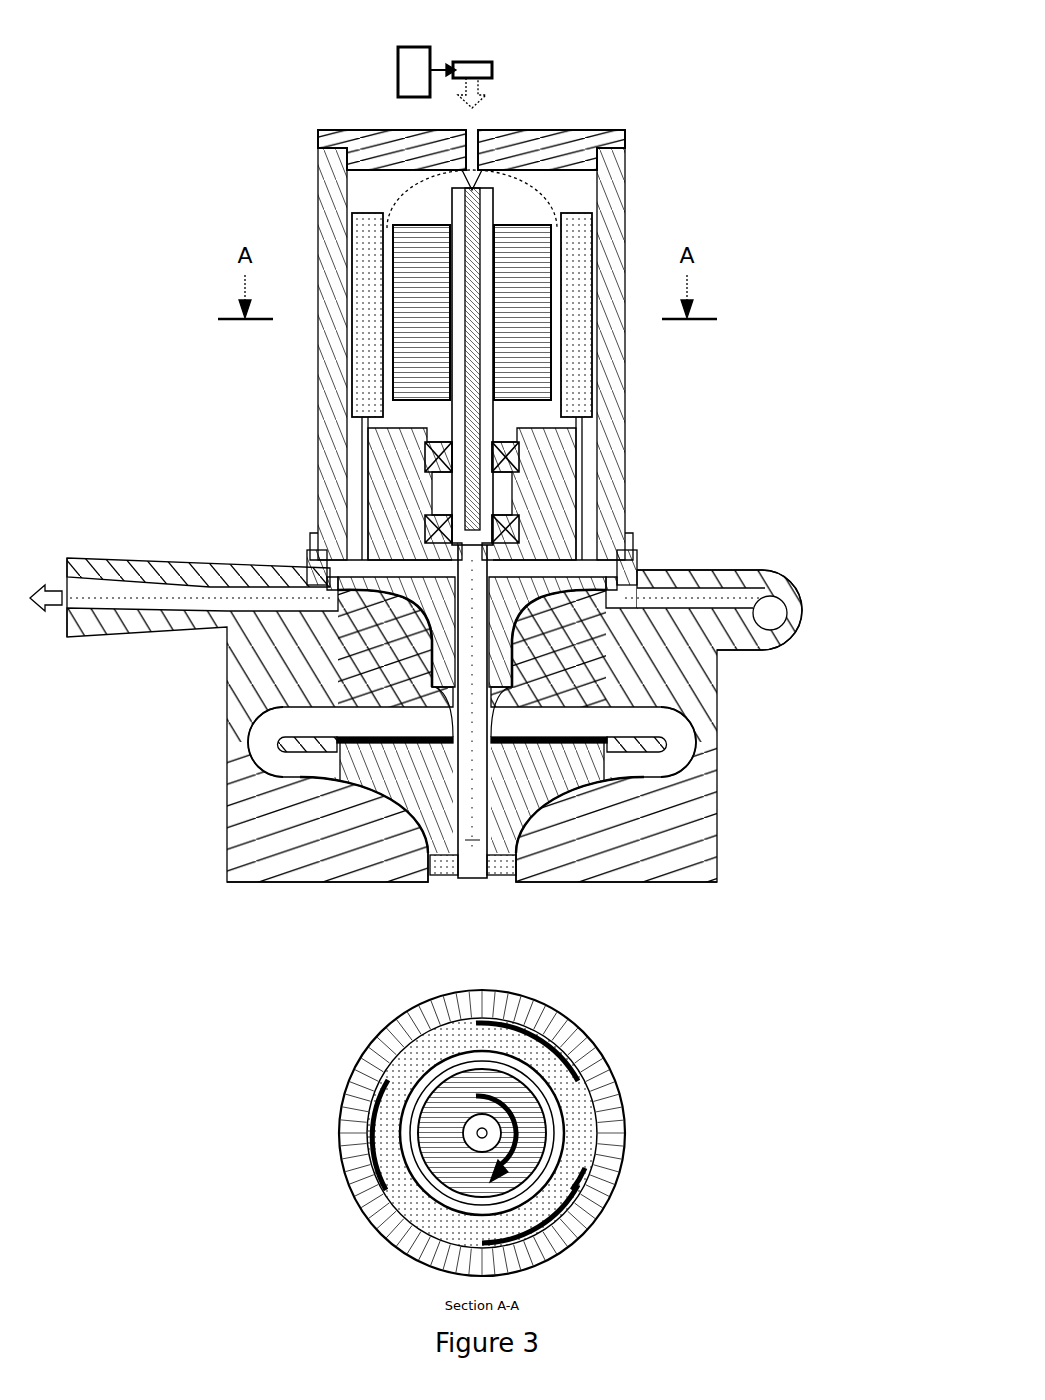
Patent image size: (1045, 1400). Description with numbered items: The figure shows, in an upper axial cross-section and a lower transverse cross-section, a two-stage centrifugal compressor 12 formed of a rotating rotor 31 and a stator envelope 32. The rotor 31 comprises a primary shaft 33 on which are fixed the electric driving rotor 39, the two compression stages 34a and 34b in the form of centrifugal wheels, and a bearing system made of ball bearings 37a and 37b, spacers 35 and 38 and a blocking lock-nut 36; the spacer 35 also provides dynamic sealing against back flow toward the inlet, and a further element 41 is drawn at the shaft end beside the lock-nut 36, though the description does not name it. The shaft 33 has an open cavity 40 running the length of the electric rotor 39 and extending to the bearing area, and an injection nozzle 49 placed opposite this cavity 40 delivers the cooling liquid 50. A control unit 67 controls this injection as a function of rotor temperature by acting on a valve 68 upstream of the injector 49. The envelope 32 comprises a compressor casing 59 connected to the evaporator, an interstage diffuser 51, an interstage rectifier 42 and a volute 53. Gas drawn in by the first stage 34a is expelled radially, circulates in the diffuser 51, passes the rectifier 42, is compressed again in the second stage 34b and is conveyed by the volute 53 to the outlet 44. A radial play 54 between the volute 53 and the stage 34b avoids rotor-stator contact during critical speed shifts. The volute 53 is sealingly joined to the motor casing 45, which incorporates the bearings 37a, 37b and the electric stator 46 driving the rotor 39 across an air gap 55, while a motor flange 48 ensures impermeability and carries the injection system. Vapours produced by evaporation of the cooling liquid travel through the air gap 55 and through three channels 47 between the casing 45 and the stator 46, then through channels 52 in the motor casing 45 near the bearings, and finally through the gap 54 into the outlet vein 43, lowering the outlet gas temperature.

The compressor 12 is at (362, 93).
The rotating rotor 31 is at (477, 887).
The stator envelope 32 is at (838, 592).
The primary shaft 33 is at (470, 838).
The first compression stage 34a is at (390, 770).
The second compression stage 34b is at (300, 628).
The spacer 35 is at (490, 727).
The blocking lock-nut 36 is at (450, 868).
The ball bearing 37a is at (436, 530).
The ball bearing 37b is at (436, 458).
The spacer 38 is at (430, 565).
The electric driving rotor 39 is at (523, 405).
The open cavity 40 is at (480, 205).
The lower seal 41 is at (503, 880).
The interstage rectifier 42 is at (650, 745).
The outlet vein 43 is at (105, 580).
The outlet 44 is at (70, 548).
The motor casing 45 is at (333, 370).
The electric stator 46 is at (600, 245).
The channels 47 is at (605, 262).
The motor flange 48 is at (320, 135).
The injection nozzle 49 is at (478, 165).
The cooling liquid 50 is at (488, 88).
The interstage diffuser 51 is at (265, 745).
The channel 52 is at (578, 448).
The volute 53 is at (812, 572).
The radial play 54 is at (620, 577).
The air gap 55 is at (527, 367).
The compressor casing 59 is at (668, 848).
The control unit 67 is at (420, 50).
The valve 68 is at (480, 62).